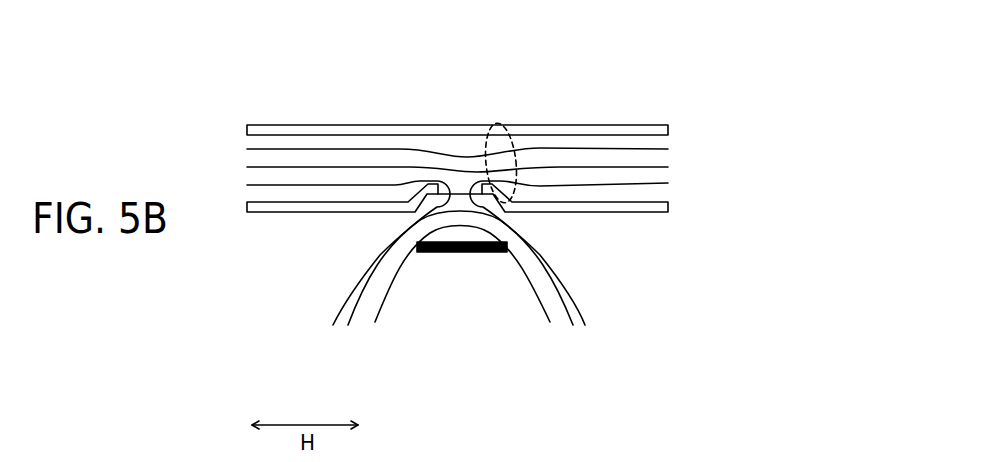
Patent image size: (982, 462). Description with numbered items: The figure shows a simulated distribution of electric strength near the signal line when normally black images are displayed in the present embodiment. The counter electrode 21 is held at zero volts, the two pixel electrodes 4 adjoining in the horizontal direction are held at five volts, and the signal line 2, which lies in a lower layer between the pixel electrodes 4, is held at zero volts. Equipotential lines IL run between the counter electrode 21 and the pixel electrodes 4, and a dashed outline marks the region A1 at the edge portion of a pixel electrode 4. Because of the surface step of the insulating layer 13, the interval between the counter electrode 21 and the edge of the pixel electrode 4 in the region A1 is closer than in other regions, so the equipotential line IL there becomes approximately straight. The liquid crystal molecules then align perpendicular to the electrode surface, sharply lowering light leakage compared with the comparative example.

The counter electrode 21 is at (667, 128).
The pixel electrode 4 is at (247, 207).
The insulating layer 13 is at (663, 271).
The signal line 2 is at (483, 253).
The region A1 is at (489, 123).
The equipotential line IL is at (662, 150).